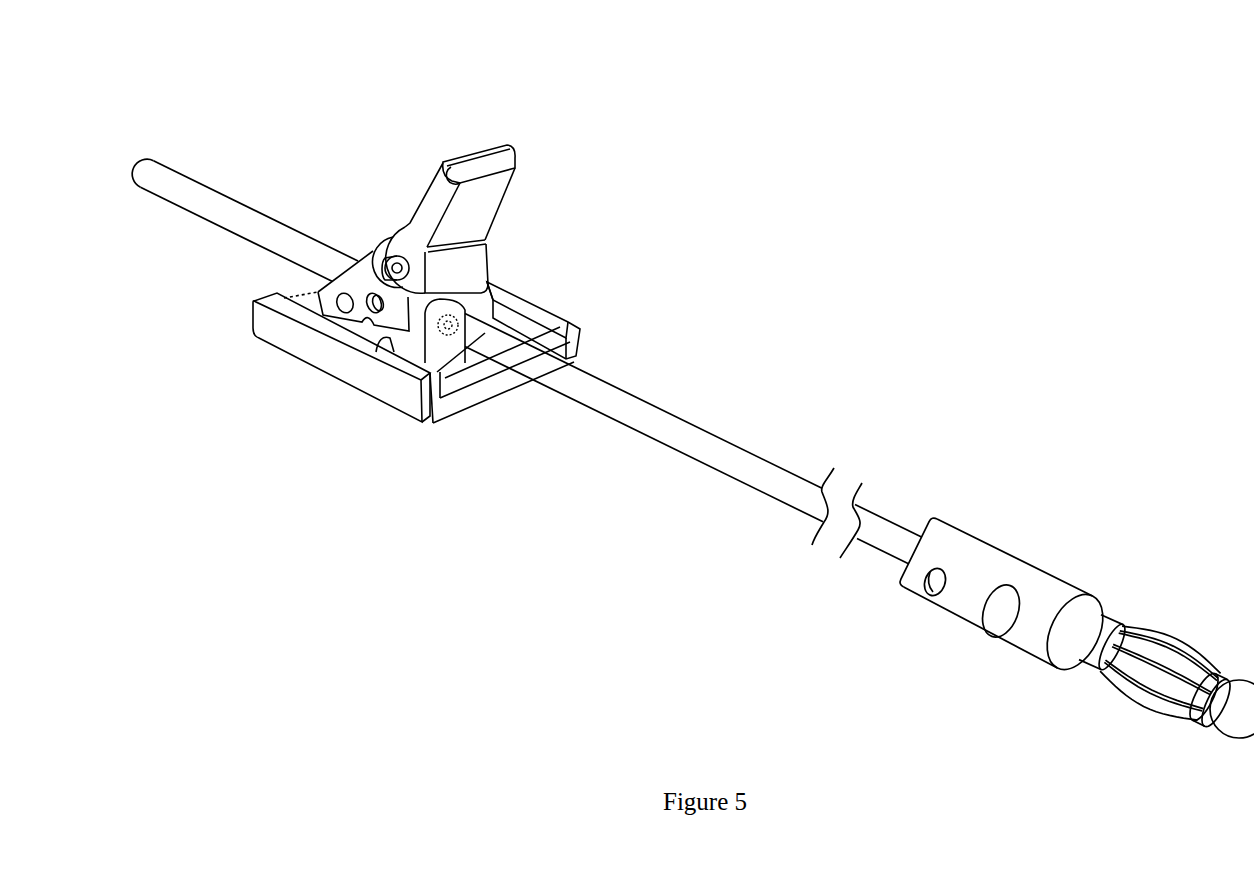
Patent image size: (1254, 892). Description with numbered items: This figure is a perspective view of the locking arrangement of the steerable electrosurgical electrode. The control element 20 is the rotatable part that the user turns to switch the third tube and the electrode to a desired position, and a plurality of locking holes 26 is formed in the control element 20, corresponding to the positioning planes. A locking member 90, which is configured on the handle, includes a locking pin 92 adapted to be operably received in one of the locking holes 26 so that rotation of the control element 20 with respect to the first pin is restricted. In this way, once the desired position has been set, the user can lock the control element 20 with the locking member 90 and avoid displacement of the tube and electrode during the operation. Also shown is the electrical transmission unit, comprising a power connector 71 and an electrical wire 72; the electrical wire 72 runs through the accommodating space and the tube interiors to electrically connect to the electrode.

The control element 20 is at (489, 166).
The locking holes 26 is at (342, 292).
The locking member 90 is at (531, 312).
The electrical wire 72 is at (767, 482).
The power connector 71 is at (1050, 592).
The locking pin 92 is at (455, 336).